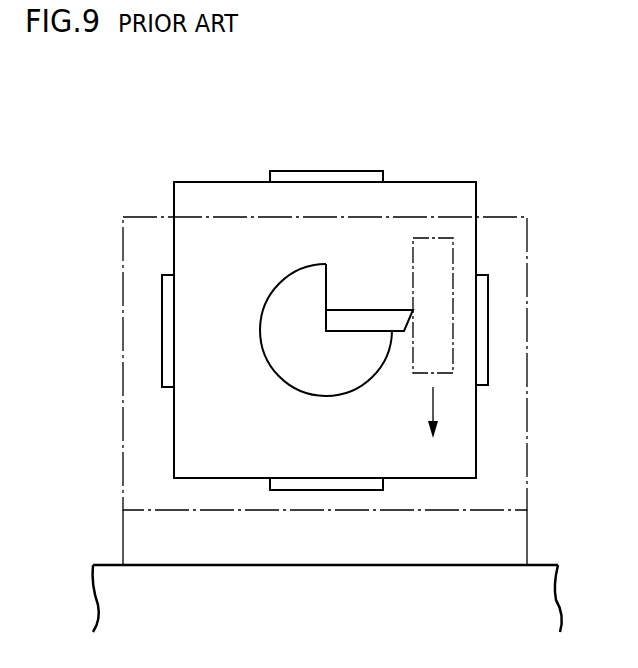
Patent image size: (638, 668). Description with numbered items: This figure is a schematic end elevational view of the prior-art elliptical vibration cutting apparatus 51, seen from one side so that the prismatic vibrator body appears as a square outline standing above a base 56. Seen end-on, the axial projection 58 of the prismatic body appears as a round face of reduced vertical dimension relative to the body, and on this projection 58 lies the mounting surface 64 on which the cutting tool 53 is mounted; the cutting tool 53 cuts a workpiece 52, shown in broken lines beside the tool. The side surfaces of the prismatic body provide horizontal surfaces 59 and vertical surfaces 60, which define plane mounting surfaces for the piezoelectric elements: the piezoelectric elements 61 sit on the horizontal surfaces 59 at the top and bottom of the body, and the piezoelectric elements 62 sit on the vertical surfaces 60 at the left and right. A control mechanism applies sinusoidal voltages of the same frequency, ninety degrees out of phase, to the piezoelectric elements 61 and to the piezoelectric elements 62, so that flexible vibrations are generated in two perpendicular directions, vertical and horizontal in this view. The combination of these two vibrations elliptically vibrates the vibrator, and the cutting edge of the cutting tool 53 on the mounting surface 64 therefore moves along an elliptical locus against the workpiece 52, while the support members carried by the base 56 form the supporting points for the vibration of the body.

The apparatus 51 is at (522, 85).
The workpiece 52 is at (433, 272).
The cutting tool 53 is at (370, 320).
The base 56 is at (548, 602).
The axial projection 58 is at (300, 372).
The horizontal surfaces 59 is at (230, 182).
The vertical surfaces 60 is at (476, 451).
The piezoelectric elements 61 is at (312, 171).
The piezoelectric elements 62 is at (488, 290).
The mounting surface 64 is at (330, 293).